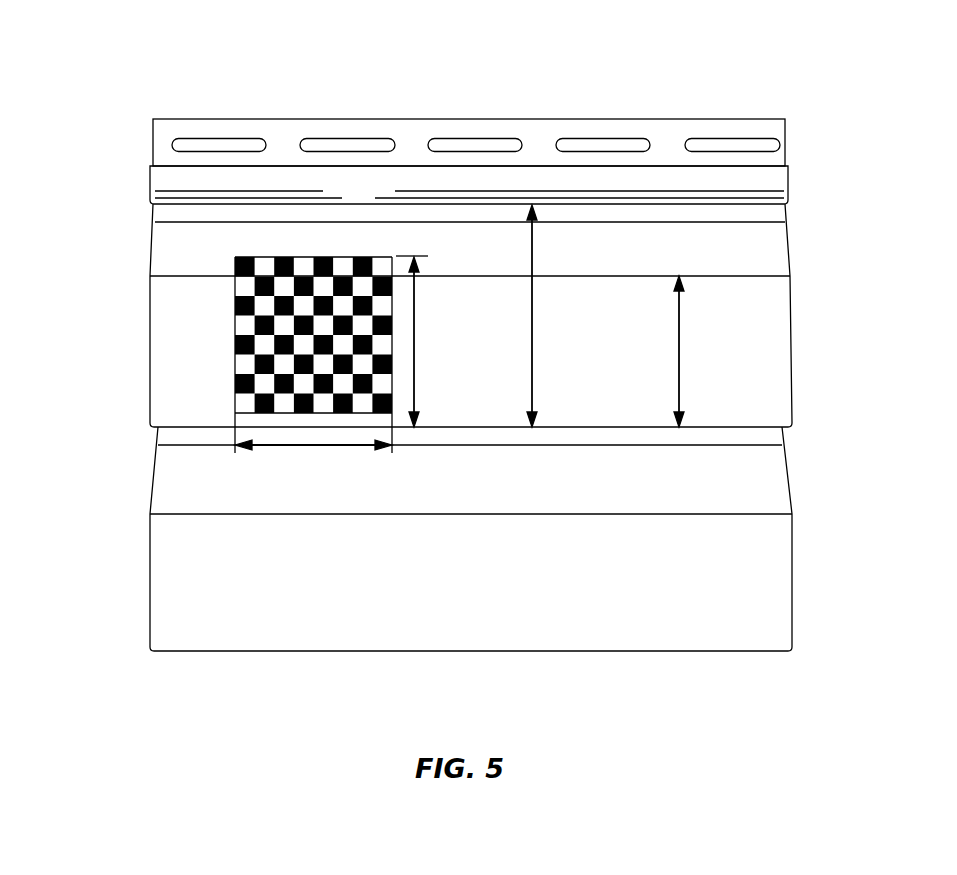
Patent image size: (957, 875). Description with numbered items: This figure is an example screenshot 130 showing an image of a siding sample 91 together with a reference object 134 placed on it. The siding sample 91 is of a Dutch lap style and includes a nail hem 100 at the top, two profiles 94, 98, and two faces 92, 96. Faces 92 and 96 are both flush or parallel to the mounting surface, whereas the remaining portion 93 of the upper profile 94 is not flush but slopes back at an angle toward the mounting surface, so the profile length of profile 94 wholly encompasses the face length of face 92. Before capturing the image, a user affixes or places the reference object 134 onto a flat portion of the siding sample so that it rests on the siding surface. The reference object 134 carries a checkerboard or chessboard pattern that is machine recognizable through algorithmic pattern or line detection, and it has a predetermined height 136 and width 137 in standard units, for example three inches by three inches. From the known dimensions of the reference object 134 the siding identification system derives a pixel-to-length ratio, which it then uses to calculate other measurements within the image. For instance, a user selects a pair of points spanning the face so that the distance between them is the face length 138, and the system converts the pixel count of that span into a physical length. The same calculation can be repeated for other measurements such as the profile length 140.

The screenshot 130 is at (378, 56).
The siding sample 91 is at (577, 118).
The nail hem 100 is at (128, 122).
The profile 94 is at (66, 206).
The remaining portion of profile 93 is at (128, 208).
The face 92 is at (128, 428).
The profile 98 is at (66, 432).
The face 96 is at (128, 516).
The reference object 134 is at (278, 257).
The height 136 is at (418, 329).
The width 137 is at (305, 452).
The profile length 140 is at (533, 250).
The face length 138 is at (680, 317).